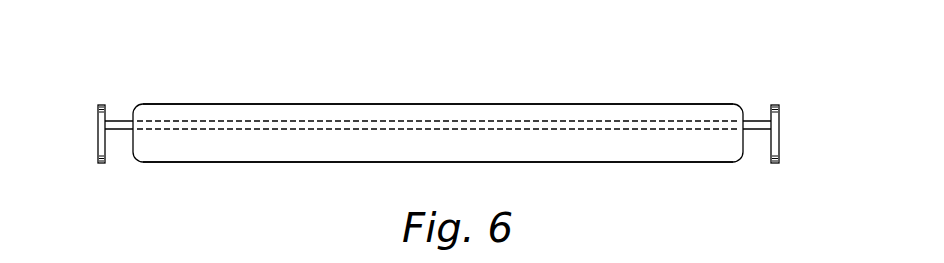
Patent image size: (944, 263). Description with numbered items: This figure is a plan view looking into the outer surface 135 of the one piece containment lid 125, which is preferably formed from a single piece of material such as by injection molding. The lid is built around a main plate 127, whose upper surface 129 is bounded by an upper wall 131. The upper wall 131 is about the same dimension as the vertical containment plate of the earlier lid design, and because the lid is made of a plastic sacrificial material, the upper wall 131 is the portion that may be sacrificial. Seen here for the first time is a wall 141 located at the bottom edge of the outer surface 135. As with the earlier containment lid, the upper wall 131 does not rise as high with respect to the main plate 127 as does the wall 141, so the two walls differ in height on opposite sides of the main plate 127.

The one piece containment lid 125 is at (203, 91).
The main plate 127 is at (117, 130).
The upper surface 129 is at (247, 122).
The upper wall 131 is at (515, 104).
The outer surface 135 is at (98, 138).
The wall 141 is at (543, 163).